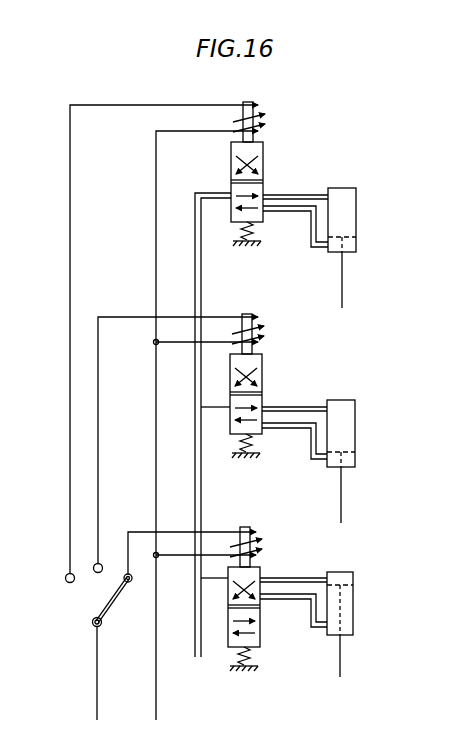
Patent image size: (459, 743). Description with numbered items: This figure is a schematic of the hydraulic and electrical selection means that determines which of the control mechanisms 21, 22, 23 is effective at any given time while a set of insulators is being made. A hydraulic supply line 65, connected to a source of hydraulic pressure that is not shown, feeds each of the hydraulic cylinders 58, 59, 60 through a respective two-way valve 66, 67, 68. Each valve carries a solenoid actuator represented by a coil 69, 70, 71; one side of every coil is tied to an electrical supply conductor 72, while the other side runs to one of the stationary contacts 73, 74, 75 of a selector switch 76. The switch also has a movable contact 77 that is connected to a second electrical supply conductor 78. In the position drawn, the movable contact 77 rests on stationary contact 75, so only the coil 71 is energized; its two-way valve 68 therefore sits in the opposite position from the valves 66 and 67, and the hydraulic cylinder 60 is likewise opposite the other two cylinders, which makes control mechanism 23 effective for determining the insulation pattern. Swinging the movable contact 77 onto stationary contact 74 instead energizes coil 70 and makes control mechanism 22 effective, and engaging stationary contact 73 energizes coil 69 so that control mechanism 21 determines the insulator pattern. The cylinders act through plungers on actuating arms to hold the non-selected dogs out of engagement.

The two-way valve 66 is at (266, 177).
The two-way valve 67 is at (266, 402).
The two-way valve 68 is at (264, 577).
The coil 69 is at (258, 115).
The coil 70 is at (257, 338).
The coil 71 is at (256, 545).
The hydraulic cylinder 58 is at (357, 220).
The hydraulic cylinder 59 is at (356, 429).
The hydraulic cylinder 60 is at (355, 612).
The control mechanism 21 is at (298, 242).
The control mechanism 22 is at (292, 456).
The control mechanism 23 is at (279, 691).
The hydraulic supply line 65 is at (194, 654).
The electrical supply conductor 72 is at (155, 683).
The stationary contact 73 is at (65, 575).
The stationary contact 74 is at (101, 564).
The stationary contact 75 is at (131, 573).
The selector switch 76 is at (64, 618).
The movable contact 77 is at (110, 601).
The electrical supply conductor 78 is at (96, 680).